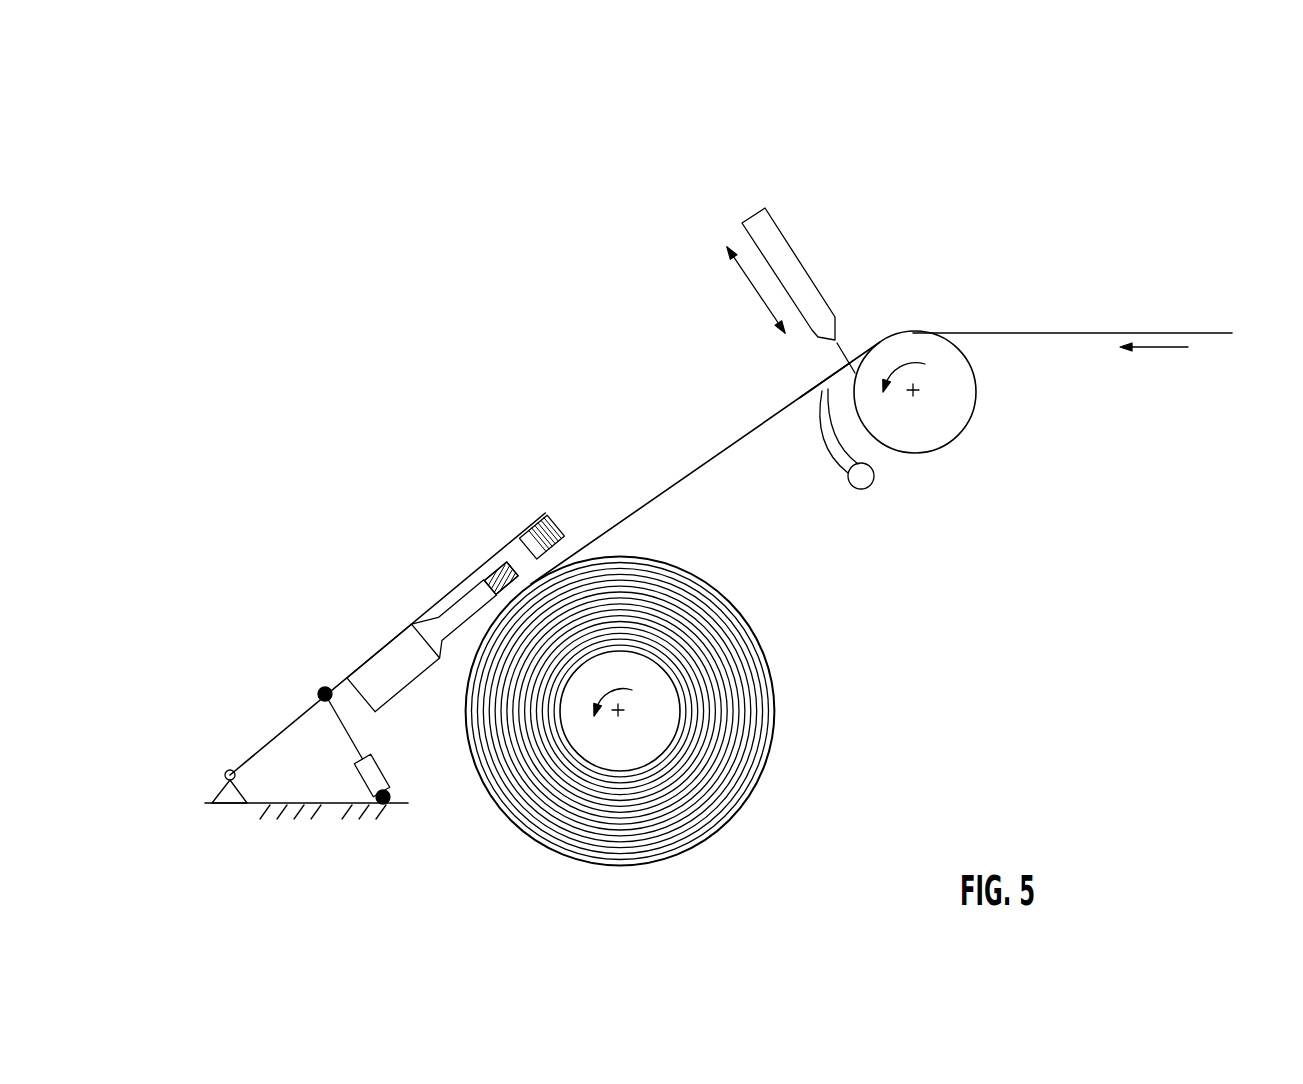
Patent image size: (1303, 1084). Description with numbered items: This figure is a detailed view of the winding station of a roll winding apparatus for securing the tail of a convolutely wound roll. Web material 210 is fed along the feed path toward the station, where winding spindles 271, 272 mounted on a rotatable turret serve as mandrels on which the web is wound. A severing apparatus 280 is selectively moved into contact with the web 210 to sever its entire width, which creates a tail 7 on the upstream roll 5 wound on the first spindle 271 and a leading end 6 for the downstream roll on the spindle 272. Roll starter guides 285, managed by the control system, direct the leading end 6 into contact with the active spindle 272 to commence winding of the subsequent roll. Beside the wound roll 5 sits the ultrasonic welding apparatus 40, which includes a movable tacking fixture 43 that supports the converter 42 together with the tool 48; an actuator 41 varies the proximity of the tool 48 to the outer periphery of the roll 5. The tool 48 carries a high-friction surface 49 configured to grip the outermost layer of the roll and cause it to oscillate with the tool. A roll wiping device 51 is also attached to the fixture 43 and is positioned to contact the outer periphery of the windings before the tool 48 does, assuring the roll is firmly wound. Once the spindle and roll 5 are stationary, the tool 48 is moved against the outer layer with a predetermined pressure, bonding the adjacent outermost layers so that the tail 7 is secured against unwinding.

The roll 5 is at (737, 825).
The winding spindle 271 is at (683, 708).
The winding spindle 272 is at (966, 425).
The web material 210 is at (1078, 332).
The severing apparatus 280 is at (763, 197).
The leading end 6 is at (858, 357).
The tail 7 is at (832, 375).
The roll starter guides 285 is at (824, 458).
The ultrasonic welding apparatus 40 is at (381, 658).
The actuator 41 is at (385, 772).
The converter 42 is at (373, 647).
The tacking fixture 43 is at (258, 742).
The tool 48 is at (490, 562).
The high-friction surface 49 is at (497, 580).
The roll wiping device 51 is at (545, 528).